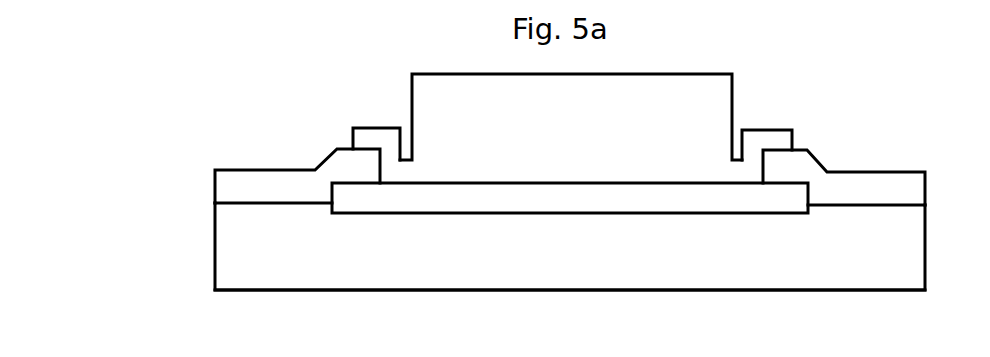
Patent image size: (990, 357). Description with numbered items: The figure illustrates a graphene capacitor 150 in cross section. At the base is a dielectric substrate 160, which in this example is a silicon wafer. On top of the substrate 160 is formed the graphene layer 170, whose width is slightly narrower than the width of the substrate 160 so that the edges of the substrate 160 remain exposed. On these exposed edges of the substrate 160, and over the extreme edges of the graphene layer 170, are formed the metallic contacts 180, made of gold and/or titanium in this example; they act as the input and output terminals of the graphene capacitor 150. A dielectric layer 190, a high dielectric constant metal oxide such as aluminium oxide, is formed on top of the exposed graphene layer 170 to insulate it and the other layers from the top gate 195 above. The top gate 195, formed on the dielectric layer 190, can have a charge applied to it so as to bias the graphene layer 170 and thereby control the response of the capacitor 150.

The graphene capacitor 150 is at (200, 200).
The dielectric substrate 160 is at (597, 275).
The graphene layer 170 is at (792, 190).
The metallic contacts 180 is at (297, 187).
The dielectric layer 190 is at (380, 135).
The top gate 195 is at (585, 127).